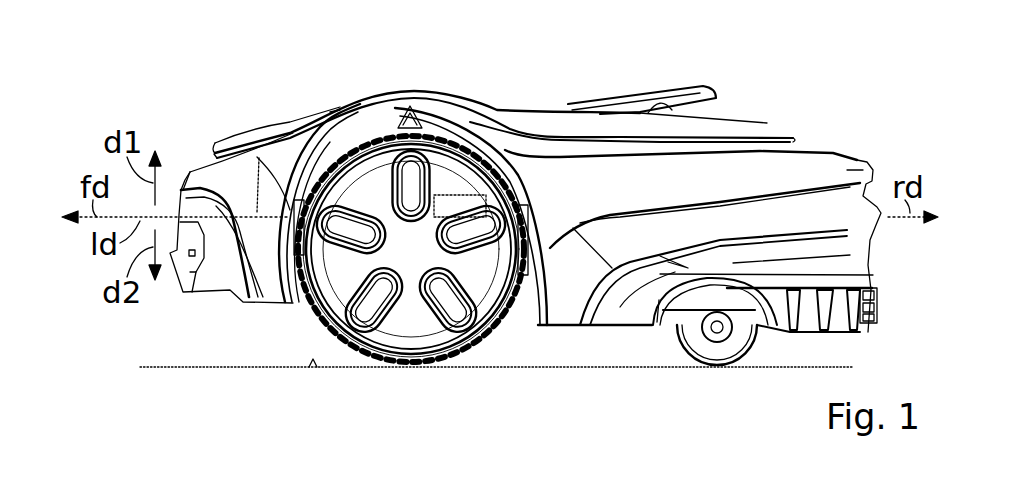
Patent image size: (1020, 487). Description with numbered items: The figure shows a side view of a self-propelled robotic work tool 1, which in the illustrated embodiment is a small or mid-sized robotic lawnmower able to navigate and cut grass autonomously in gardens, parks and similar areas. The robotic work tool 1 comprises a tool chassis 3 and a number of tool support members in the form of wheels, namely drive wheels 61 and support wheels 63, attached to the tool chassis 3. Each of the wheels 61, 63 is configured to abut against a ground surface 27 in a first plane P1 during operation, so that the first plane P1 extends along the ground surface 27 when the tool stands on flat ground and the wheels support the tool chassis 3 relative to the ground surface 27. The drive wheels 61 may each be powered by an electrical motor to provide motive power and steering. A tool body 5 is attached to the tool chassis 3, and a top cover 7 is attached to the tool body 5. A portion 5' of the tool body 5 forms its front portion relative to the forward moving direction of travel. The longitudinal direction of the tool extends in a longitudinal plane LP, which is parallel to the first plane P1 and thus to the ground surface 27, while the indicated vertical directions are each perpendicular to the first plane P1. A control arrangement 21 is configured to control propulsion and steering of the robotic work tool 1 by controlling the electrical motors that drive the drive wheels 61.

The self-propelled robotic work tool 1 is at (188, 61).
The tool chassis 3 is at (515, 328).
The tool body 5 is at (704, 190).
The portion 5' is at (186, 145).
The top cover 7 is at (250, 140).
The control arrangement 21 is at (462, 194).
The ground surface 27 is at (312, 366).
The drive wheels 61 is at (413, 347).
The support wheels 63 is at (720, 353).
The longitudinal plane LP is at (308, 127).
The first plane P1 is at (197, 370).